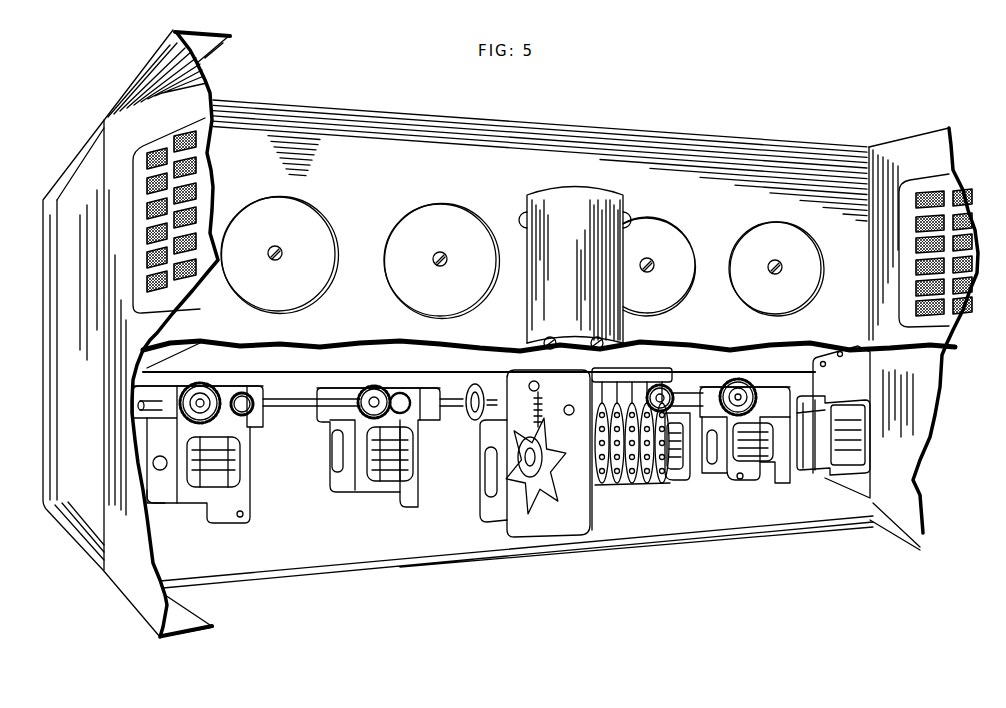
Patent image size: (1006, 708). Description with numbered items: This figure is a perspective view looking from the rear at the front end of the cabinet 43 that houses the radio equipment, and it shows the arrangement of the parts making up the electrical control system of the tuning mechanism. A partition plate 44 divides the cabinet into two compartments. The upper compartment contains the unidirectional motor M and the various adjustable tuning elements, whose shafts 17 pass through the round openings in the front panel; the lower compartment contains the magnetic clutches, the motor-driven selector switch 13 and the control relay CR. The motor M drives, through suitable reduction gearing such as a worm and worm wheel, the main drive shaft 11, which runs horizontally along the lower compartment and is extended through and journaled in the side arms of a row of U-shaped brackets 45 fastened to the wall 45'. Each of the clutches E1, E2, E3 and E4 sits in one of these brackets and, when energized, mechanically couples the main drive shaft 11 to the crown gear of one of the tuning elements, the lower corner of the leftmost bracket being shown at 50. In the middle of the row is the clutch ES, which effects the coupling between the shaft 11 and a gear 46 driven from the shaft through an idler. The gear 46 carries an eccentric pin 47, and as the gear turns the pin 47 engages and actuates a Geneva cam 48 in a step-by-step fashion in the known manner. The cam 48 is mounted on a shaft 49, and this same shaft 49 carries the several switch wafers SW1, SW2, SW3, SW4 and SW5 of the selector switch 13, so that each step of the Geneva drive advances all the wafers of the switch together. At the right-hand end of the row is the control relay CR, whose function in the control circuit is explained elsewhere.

The shaft 17 is at (282, 253).
The motor M is at (591, 188).
The partition plate 44 is at (340, 342).
The cabinet 43 is at (103, 457).
The U-shaped bracket 45 is at (474, 373).
The wall 45' is at (294, 475).
The main drive shaft 11 is at (292, 408).
The bracket leg 50 is at (162, 497).
The magnetic clutch E4 is at (232, 524).
The magnetic clutch E3 is at (383, 508).
The magnetic clutch ES is at (495, 512).
The gear 46 is at (540, 388).
The eccentric pin 47 is at (543, 404).
The Geneva cam 48 is at (540, 504).
The shaft 49 is at (535, 450).
The switch wafer SW5 is at (602, 483).
The switch wafer SW4 is at (617, 482).
The switch wafer SW3 is at (632, 483).
The switch wafer SW2 is at (647, 482).
The switch wafer SW1 is at (662, 480).
The selector switch 13 is at (697, 497).
The magnetic clutch E2 is at (668, 477).
The magnetic clutch E1 is at (740, 483).
The control relay CR is at (818, 468).